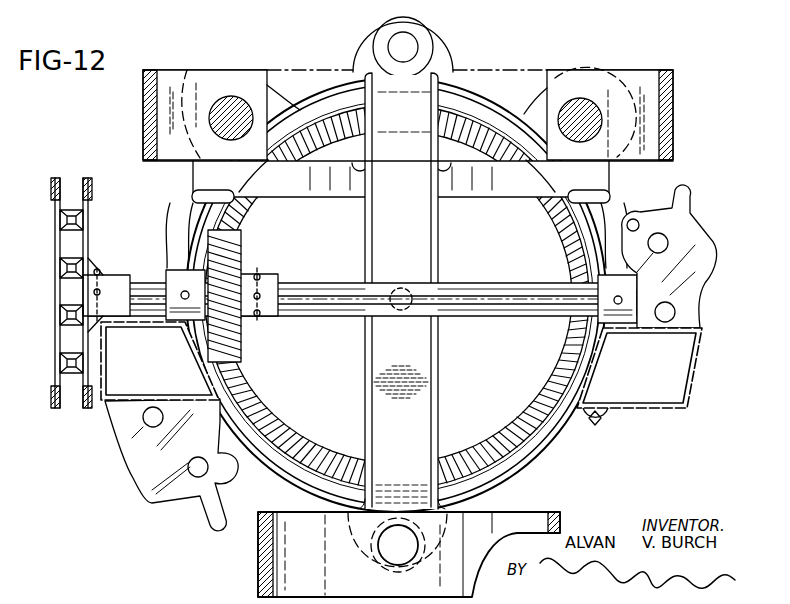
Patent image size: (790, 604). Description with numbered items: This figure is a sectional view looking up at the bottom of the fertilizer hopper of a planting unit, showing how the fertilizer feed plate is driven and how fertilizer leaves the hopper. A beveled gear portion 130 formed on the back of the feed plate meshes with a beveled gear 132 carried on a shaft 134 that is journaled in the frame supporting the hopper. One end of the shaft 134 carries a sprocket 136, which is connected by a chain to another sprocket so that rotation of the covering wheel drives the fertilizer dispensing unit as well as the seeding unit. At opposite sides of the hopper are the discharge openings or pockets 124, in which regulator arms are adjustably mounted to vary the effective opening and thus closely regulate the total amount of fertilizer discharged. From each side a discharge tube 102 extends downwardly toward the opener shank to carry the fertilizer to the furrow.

The discharge tube 102 is at (106, 403).
The discharge openings or pockets 124 is at (130, 394).
The beveled gear portion 130 is at (270, 393).
The beveled gear 132 is at (244, 268).
The shaft 134 is at (494, 317).
The sprocket 136 is at (70, 409).